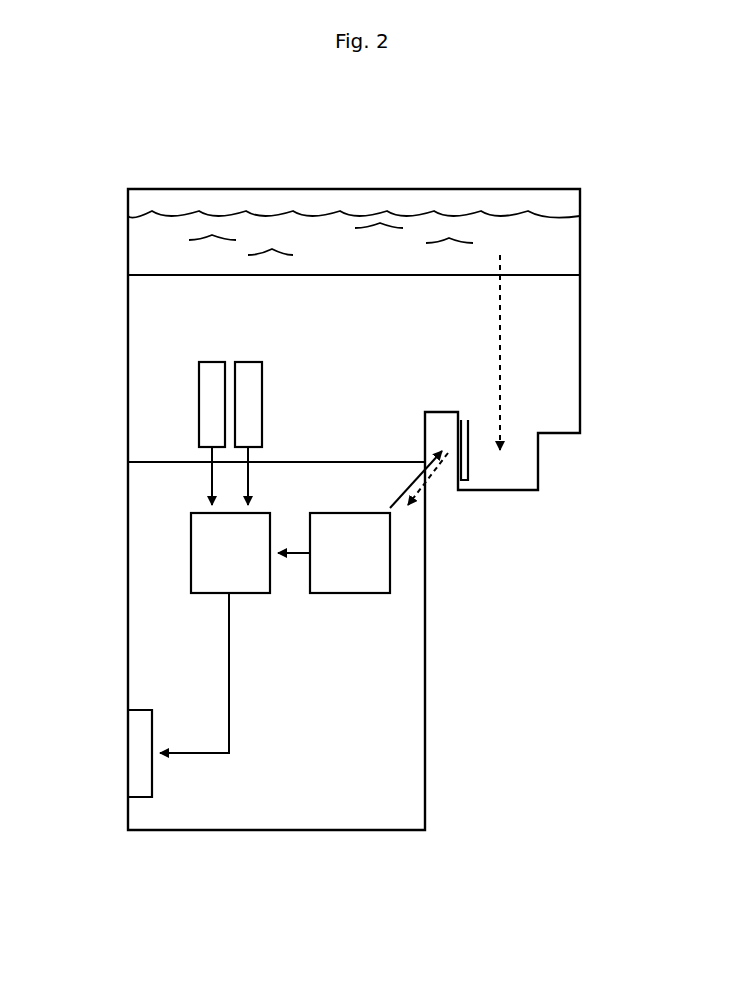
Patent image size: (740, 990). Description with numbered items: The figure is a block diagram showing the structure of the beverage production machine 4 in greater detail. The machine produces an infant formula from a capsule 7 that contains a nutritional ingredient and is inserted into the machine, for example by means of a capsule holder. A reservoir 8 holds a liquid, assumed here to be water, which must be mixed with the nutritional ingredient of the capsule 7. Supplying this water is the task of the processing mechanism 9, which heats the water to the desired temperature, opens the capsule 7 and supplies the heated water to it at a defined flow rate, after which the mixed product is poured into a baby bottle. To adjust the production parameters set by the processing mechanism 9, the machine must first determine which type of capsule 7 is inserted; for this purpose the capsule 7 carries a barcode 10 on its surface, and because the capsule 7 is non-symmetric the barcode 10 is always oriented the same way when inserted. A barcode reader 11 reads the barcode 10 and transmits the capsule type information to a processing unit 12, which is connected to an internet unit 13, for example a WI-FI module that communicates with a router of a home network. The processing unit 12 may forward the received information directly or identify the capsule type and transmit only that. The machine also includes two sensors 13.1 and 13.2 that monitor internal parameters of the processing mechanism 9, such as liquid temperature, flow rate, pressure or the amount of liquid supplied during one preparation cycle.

The beverage production machine 4 is at (619, 793).
The capsule 7 is at (530, 470).
The reservoir 8 is at (211, 198).
The processing mechanism 9 is at (146, 352).
The barcode 10 is at (469, 481).
The barcode reader 11 is at (380, 580).
The processing unit 12 is at (205, 557).
The internet unit 13 is at (136, 780).
The sensor 13.1 is at (222, 362).
The sensor 13.2 is at (265, 388).